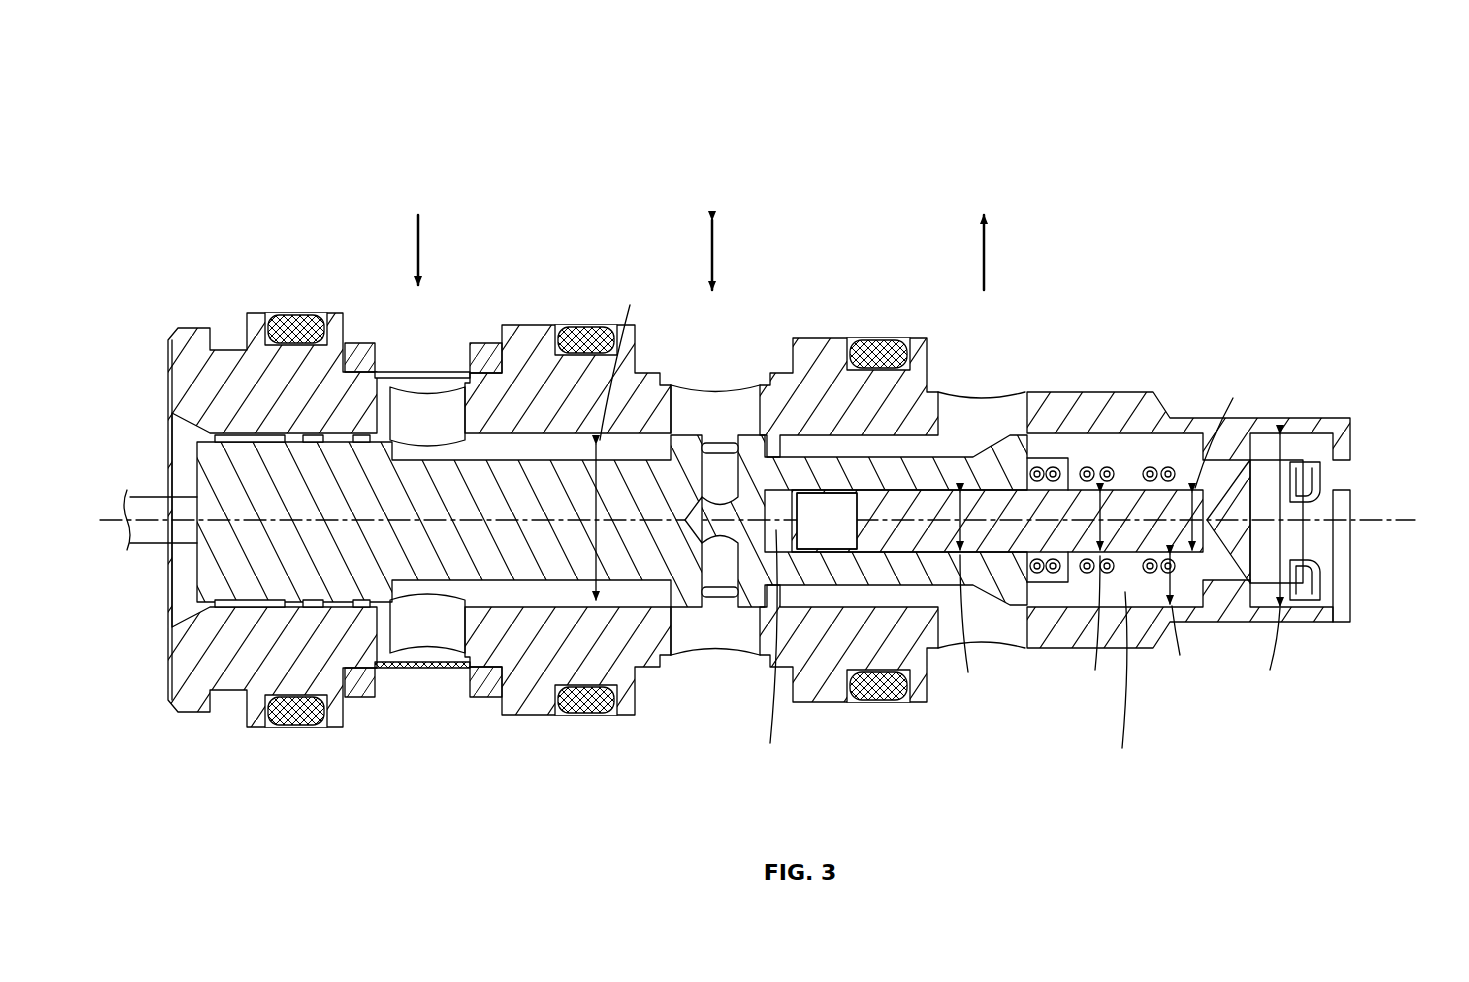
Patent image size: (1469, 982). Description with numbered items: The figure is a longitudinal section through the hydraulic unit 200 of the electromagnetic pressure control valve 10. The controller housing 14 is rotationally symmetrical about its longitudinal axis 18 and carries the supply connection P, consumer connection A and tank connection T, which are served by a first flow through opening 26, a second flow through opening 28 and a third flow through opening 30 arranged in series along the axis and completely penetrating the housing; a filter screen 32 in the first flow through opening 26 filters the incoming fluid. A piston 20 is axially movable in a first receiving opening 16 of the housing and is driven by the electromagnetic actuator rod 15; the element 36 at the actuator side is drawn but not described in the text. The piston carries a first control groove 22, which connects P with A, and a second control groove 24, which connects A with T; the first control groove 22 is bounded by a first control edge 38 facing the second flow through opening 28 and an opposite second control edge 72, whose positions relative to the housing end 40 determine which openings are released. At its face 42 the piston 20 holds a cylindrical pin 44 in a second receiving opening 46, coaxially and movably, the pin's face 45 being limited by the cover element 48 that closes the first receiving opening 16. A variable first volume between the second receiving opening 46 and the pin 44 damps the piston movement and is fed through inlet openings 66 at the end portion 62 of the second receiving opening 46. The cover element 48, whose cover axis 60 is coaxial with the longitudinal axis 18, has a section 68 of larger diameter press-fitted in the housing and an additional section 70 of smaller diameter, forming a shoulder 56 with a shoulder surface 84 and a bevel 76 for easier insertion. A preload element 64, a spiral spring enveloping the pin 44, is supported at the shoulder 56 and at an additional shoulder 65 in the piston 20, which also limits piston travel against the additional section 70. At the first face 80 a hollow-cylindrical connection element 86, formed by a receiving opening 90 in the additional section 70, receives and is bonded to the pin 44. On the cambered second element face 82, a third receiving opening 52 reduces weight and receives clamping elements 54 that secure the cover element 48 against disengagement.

The pressure control valve 10 is at (784, 421).
The hydraulic unit 200 is at (1130, 538).
The controller housing 14 is at (193, 322).
The electromagnetic actuator rod 15 is at (172, 545).
The first receiving opening 16 is at (477, 693).
The longitudinal axis 18 is at (1415, 520).
The cover axis 60 is at (1410, 520).
The piston 20 is at (612, 491).
The first control groove 22 is at (545, 700).
The second control groove 24 is at (875, 702).
The first flow through opening 26 is at (428, 405).
The second flow through opening 28 is at (700, 400).
The third flow through opening 30 is at (980, 410).
The filter screen 32 is at (478, 340).
The actuating tappet 36 is at (185, 495).
The first control edge 38 is at (645, 700).
The housing end 40 is at (1350, 558).
The face 42 is at (1080, 600).
The cylindrical pin 44 is at (1097, 459).
The face of the pin 45 is at (1240, 585).
The second receiving opening 46 is at (826, 550).
The cover element 48 is at (1275, 416).
The third receiving opening 52 is at (1303, 540).
The clamping elements 54 is at (1322, 590).
The shoulder 56 is at (1215, 470).
The end portion 62 is at (722, 500).
The preload element 64 is at (1087, 466).
The additional shoulder 65 is at (1040, 466).
The inlet openings 66 is at (720, 578).
The section 68 is at (1262, 432).
The additional section 70 is at (1165, 440).
The second control edge 72 is at (370, 690).
The bevel 76 is at (1212, 445).
The first face 80 is at (1150, 466).
The second element face 82 is at (1318, 448).
The shoulder surface 84 is at (1190, 598).
The connection element 86 is at (1175, 585).
The receiving opening 90 is at (1162, 590).